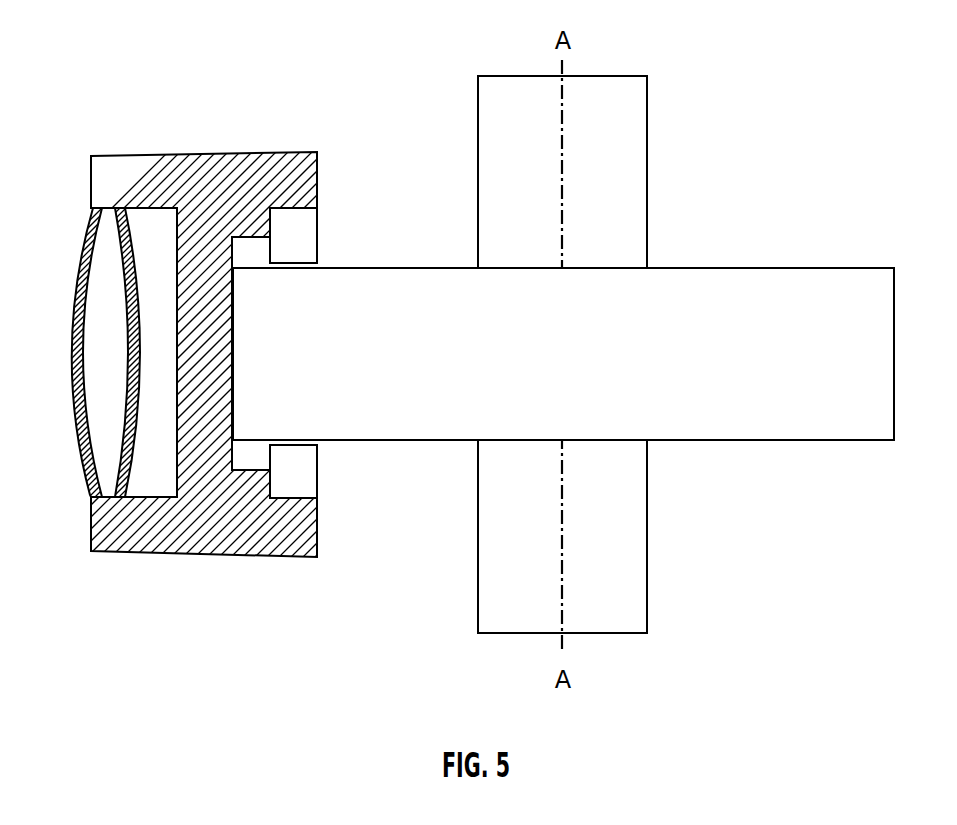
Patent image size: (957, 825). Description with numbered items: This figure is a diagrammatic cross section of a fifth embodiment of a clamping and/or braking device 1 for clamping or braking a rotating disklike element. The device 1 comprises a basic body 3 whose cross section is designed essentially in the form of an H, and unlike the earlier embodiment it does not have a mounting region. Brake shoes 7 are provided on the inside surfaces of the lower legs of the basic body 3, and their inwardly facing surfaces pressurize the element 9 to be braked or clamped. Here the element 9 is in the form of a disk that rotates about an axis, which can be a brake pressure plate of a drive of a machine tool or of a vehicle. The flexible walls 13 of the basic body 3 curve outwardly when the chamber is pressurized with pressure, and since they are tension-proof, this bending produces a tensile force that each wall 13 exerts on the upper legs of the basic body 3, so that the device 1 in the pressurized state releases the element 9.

The clamping and/or braking device 1 is at (462, 432).
The basic body 3 is at (133, 156).
The brake shoes 7 is at (306, 229).
The element 9 is at (805, 280).
The flexible walls 13 is at (79, 275).